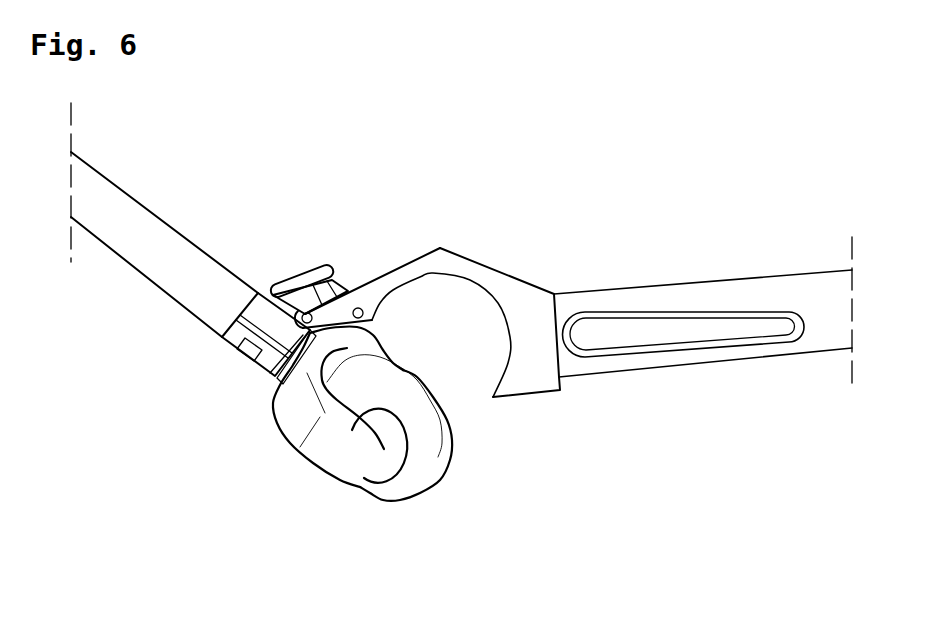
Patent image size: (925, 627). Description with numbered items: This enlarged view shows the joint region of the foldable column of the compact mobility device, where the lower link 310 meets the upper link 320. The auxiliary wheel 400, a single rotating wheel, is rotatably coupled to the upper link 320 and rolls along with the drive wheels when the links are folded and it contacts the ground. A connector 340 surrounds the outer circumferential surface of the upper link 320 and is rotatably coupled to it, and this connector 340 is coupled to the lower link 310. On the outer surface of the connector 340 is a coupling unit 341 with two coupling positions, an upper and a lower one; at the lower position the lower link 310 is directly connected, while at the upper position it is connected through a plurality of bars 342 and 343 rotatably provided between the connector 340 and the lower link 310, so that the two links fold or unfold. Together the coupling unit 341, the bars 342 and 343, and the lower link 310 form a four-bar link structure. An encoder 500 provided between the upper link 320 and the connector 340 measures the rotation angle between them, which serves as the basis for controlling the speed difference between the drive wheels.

The lower link 310 is at (640, 300).
The upper link 320 is at (143, 257).
The connector 340 is at (262, 370).
The coupling unit 341 is at (312, 297).
The bar 342 is at (315, 273).
The bar 343 is at (338, 287).
The auxiliary wheel 400 is at (403, 483).
The encoder 500 is at (255, 350).